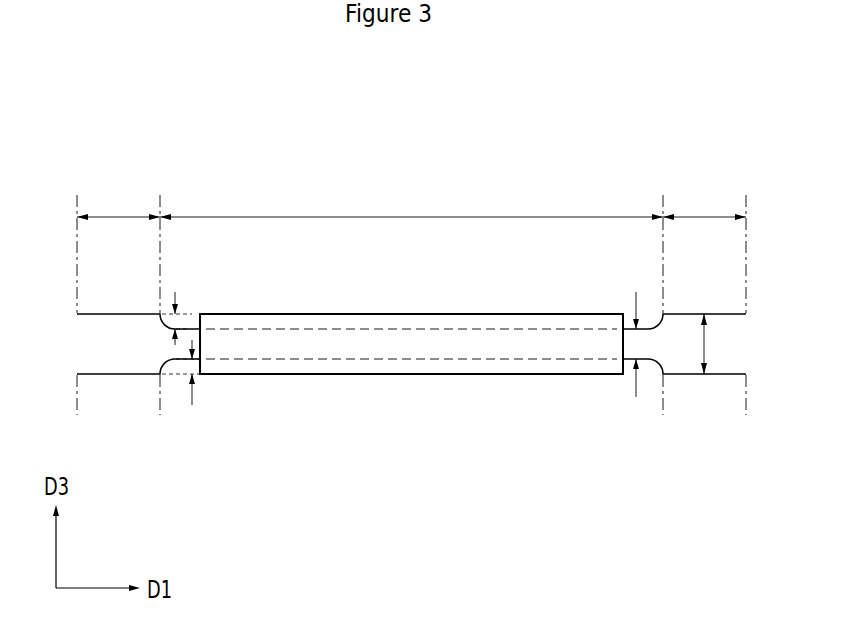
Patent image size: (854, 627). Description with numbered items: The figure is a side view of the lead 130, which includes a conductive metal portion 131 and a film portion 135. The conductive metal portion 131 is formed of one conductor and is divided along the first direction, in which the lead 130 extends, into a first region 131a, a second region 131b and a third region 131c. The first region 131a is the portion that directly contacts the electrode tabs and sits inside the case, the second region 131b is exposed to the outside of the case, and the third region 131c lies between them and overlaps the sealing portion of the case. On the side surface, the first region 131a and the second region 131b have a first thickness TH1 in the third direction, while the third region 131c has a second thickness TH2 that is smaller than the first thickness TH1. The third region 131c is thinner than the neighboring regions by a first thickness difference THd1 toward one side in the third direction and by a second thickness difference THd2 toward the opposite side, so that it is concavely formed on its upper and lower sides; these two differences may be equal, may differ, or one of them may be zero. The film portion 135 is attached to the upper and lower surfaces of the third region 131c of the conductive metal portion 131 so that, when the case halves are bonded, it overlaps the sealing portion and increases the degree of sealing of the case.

The lead 130 is at (438, 168).
The conductive metal portion 131 is at (118, 375).
The first region 131a is at (118, 203).
The second region 131b is at (704, 202).
The third region 131c is at (411, 202).
The film portion 135 is at (410, 375).
The first thickness TH1 is at (723, 344).
The second thickness TH2 is at (656, 344).
The first thickness difference THd1 is at (190, 320).
The second thickness difference THd2 is at (201, 375).